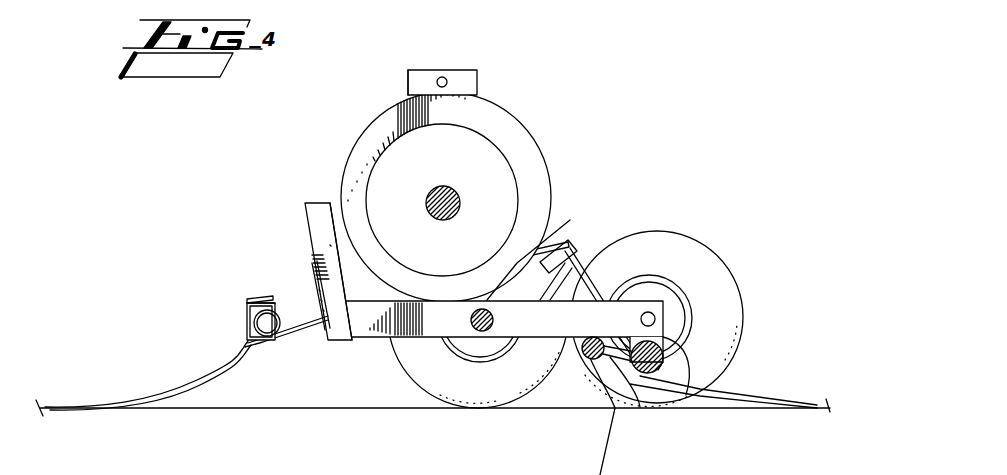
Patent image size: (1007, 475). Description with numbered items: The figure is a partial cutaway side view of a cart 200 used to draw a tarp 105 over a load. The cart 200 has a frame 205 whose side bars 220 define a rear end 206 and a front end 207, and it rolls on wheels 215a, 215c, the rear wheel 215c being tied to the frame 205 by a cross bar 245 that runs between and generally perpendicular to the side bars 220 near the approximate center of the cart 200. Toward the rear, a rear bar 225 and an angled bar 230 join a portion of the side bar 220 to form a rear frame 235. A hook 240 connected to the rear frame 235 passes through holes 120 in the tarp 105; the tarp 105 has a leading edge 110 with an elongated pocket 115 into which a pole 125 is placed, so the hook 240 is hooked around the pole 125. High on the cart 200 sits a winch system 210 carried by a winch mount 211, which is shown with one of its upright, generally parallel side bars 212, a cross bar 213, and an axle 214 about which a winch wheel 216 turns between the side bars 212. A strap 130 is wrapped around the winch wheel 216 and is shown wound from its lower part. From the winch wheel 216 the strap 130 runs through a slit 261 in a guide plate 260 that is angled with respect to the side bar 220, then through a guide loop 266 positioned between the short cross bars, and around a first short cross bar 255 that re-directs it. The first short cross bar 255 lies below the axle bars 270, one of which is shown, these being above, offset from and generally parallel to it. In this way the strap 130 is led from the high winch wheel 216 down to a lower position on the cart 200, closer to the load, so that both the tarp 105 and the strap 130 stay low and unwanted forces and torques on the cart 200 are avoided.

The cart 200 is at (590, 88).
The frame 205 is at (367, 345).
The rear end 206 is at (157, 215).
The front end 207 is at (705, 127).
The winch system 210 is at (350, 118).
The winch mount 211 is at (422, 57).
The side bars 212 is at (410, 83).
The cross bar 213 is at (442, 78).
The axle 214 is at (547, 118).
The wheel 215a is at (727, 280).
The rear wheel 215c is at (415, 373).
The winch wheel 216 is at (443, 203).
The side bar 220 is at (537, 327).
The rear bar 225 is at (315, 200).
The angled bar 230 is at (337, 217).
The rear frame 235 is at (290, 223).
The hook 240 is at (247, 303).
The cross bar 245 is at (482, 333).
The first short cross bar 255 is at (672, 378).
The guide plate 260 is at (572, 248).
The slit 261 is at (565, 235).
The guide loop 266 is at (639, 410).
The axle bar 270 is at (665, 305).
The tarp 105 is at (100, 403).
The leading edge 110 is at (268, 322).
The elongated pocket 115 is at (257, 352).
The holes 120 is at (247, 317).
The pole 125 is at (270, 300).
The strap 130 is at (777, 393).